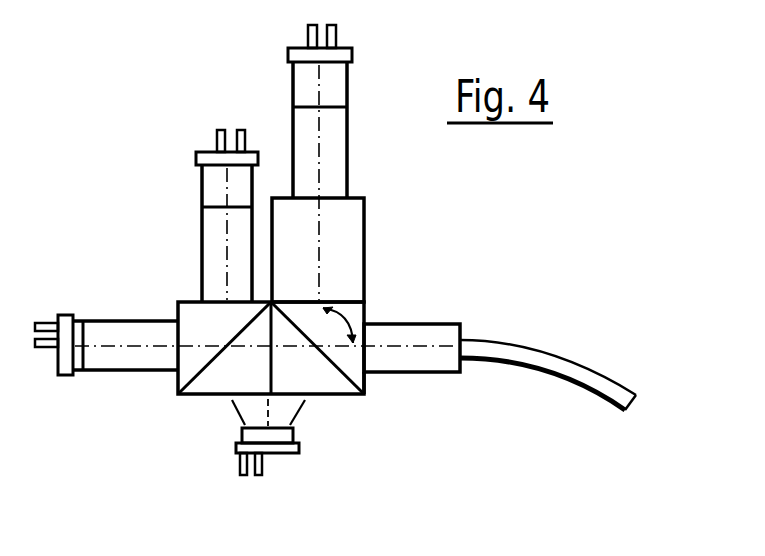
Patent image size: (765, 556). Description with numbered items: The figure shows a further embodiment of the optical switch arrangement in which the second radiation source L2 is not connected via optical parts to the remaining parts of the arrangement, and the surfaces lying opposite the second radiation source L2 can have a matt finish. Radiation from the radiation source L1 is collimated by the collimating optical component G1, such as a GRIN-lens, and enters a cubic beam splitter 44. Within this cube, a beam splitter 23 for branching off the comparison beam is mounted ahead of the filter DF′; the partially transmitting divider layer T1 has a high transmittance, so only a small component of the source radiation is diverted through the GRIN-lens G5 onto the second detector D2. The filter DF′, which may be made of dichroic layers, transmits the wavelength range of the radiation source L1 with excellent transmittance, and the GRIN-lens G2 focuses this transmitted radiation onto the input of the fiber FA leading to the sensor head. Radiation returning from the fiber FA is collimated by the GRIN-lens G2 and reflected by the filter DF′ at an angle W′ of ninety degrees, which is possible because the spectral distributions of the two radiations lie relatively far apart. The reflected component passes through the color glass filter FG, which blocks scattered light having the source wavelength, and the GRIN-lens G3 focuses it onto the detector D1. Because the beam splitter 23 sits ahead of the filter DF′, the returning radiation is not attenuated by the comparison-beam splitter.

The detector D1 is at (340, 88).
The second detector D2 is at (205, 177).
The GRIN-lens G3 is at (335, 145).
The GRIN-lens G5 is at (207, 240).
The color glass filter FG is at (343, 230).
The optical component for collimating G1 is at (145, 335).
The GRIN-lens G2 is at (440, 360).
The radiation source L1 is at (78, 328).
The second radiation source L2 is at (275, 440).
The partially transmittent divider layer T1 is at (196, 372).
The beam splitter 23 is at (209, 380).
The filter DF′ is at (340, 368).
The cubic beam splitter 44 is at (368, 380).
The fiber FA is at (542, 363).
The angle W′ is at (365, 310).